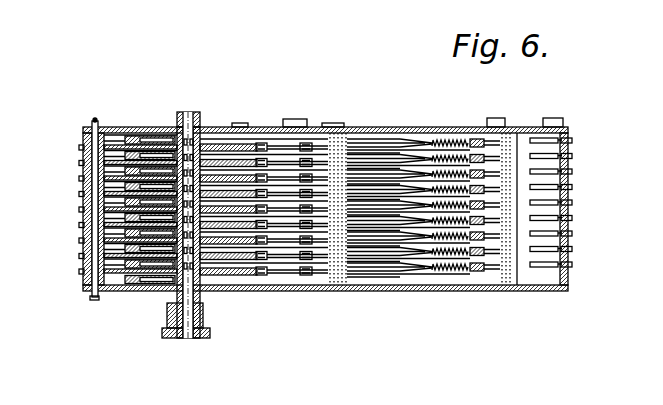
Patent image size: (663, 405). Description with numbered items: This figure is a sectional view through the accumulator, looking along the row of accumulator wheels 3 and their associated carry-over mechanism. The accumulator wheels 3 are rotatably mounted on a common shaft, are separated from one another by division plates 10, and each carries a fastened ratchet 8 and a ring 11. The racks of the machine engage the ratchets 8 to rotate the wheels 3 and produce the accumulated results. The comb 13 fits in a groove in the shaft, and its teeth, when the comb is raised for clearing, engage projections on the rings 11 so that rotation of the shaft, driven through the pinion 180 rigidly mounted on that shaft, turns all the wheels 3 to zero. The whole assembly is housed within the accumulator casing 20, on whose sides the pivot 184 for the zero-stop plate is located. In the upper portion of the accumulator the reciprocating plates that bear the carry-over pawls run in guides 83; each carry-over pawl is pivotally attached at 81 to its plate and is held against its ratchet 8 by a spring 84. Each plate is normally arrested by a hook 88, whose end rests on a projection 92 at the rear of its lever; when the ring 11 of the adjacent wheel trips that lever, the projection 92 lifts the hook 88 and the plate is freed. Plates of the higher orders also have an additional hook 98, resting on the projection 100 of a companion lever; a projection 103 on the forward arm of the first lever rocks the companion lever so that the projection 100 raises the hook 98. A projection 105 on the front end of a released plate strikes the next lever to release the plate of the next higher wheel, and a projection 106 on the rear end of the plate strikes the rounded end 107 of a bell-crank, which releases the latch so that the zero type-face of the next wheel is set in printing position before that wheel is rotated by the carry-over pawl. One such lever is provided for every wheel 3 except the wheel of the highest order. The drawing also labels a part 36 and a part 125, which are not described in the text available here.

The accumulator wheel 3 is at (136, 256).
The ratchet 8 is at (158, 165).
The division plate 10 is at (83, 180).
The ring 11 is at (170, 266).
The comb 13 is at (196, 140).
The accumulator casing 20 is at (527, 130).
The bus bar 36 is at (226, 163).
The pivot 81 is at (398, 258).
The guide 83 is at (510, 276).
The spring 84 is at (455, 262).
The hook 88 is at (381, 160).
The projection 92 is at (346, 210).
The hook 98 is at (358, 150).
The projection 100 is at (366, 265).
The projection 103 is at (264, 260).
The projection 105 is at (309, 165).
The projection 106 is at (568, 178).
The rounded end 107 is at (549, 278).
The coil spring 125 is at (500, 56).
The pinion 180 is at (176, 338).
The pivot 184 is at (95, 119).